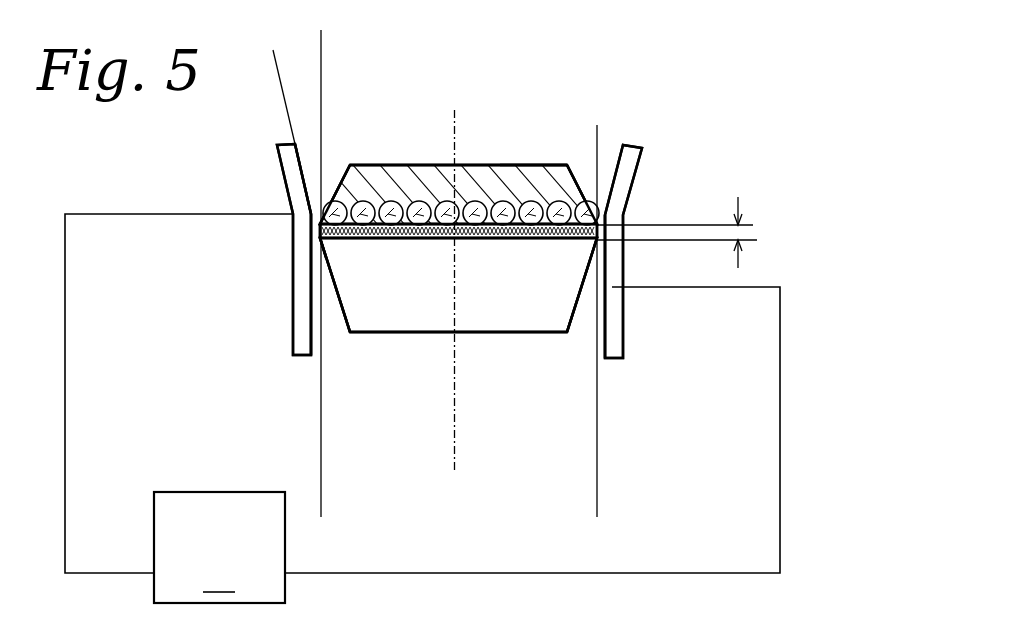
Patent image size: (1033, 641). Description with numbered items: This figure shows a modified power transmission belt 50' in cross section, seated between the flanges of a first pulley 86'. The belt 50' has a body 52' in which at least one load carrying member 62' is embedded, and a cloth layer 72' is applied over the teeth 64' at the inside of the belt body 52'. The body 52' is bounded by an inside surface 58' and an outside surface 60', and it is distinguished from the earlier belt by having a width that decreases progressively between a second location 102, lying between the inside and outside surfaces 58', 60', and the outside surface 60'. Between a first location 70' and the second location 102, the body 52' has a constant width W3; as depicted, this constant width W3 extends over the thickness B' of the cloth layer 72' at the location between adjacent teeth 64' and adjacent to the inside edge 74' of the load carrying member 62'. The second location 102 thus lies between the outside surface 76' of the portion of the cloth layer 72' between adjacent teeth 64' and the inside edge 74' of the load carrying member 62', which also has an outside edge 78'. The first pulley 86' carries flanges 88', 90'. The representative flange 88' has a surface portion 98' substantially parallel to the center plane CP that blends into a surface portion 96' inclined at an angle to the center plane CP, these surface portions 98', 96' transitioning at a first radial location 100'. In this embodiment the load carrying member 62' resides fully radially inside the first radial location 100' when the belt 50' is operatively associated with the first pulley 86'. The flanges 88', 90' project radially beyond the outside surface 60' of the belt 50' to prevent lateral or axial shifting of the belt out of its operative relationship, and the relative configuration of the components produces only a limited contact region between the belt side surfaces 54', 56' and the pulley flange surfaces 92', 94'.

The power transmission belt 50' is at (465, 166).
The body 52' is at (473, 150).
The belt side surface 54' is at (303, 315).
The belt side surface 56' is at (657, 310).
The inside surface 58' is at (458, 392).
The outside surface 60' is at (458, 89).
The load carrying member 62' is at (552, 122).
The teeth 64' is at (458, 352).
The first location 70' is at (261, 319).
The cloth layer 72' is at (653, 216).
The inside edge 74' is at (458, 347).
The outside surface 76' is at (622, 134).
The outside edge 78' is at (461, 136).
The first pulley 86' is at (422, 373).
The flange 88' is at (228, 297).
The flange 90' is at (666, 286).
The pulley flange surface 92' is at (245, 236).
The pulley flange surface 94' is at (662, 251).
The surface portion 96' is at (329, 140).
The surface portion 98' is at (286, 352).
The first radial location 100' is at (356, 146).
The second location 102 is at (322, 224).
The thickness B' is at (691, 241).
The width W3 is at (597, 508).
The center plane CP is at (454, 467).